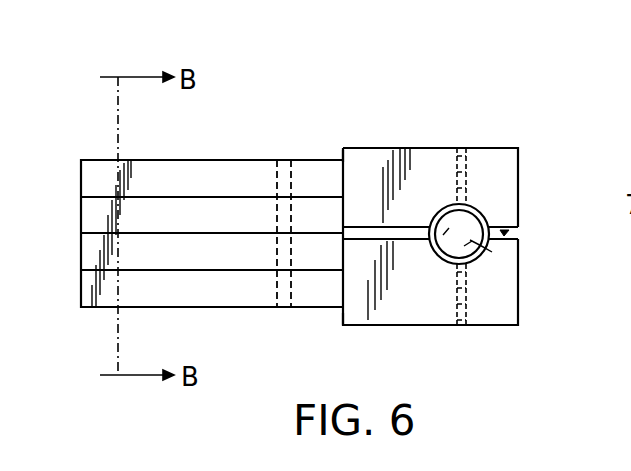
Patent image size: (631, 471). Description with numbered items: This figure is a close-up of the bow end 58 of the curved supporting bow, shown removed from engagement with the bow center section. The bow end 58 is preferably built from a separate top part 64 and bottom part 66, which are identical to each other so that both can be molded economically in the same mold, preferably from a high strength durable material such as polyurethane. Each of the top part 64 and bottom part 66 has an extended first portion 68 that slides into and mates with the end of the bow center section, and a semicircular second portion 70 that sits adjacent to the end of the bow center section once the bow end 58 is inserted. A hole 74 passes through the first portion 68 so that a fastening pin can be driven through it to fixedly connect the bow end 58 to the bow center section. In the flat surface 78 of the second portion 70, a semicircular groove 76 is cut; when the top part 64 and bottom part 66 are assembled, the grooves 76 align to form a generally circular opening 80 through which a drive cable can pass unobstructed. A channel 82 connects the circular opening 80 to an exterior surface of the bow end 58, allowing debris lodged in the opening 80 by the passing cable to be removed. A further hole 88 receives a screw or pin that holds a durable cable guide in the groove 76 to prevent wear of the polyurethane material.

The bow end 58 is at (487, 148).
The top part 64 is at (370, 148).
The bottom part 66 is at (363, 302).
The extended first portion 68 is at (155, 160).
The semicircular second portion 70 is at (343, 146).
The hole 74 is at (283, 160).
The semicircular groove 76 is at (468, 222).
The flat surface 78 is at (509, 226).
The circular opening 80 is at (492, 252).
The channel 82 is at (504, 232).
The hole 88 is at (460, 148).